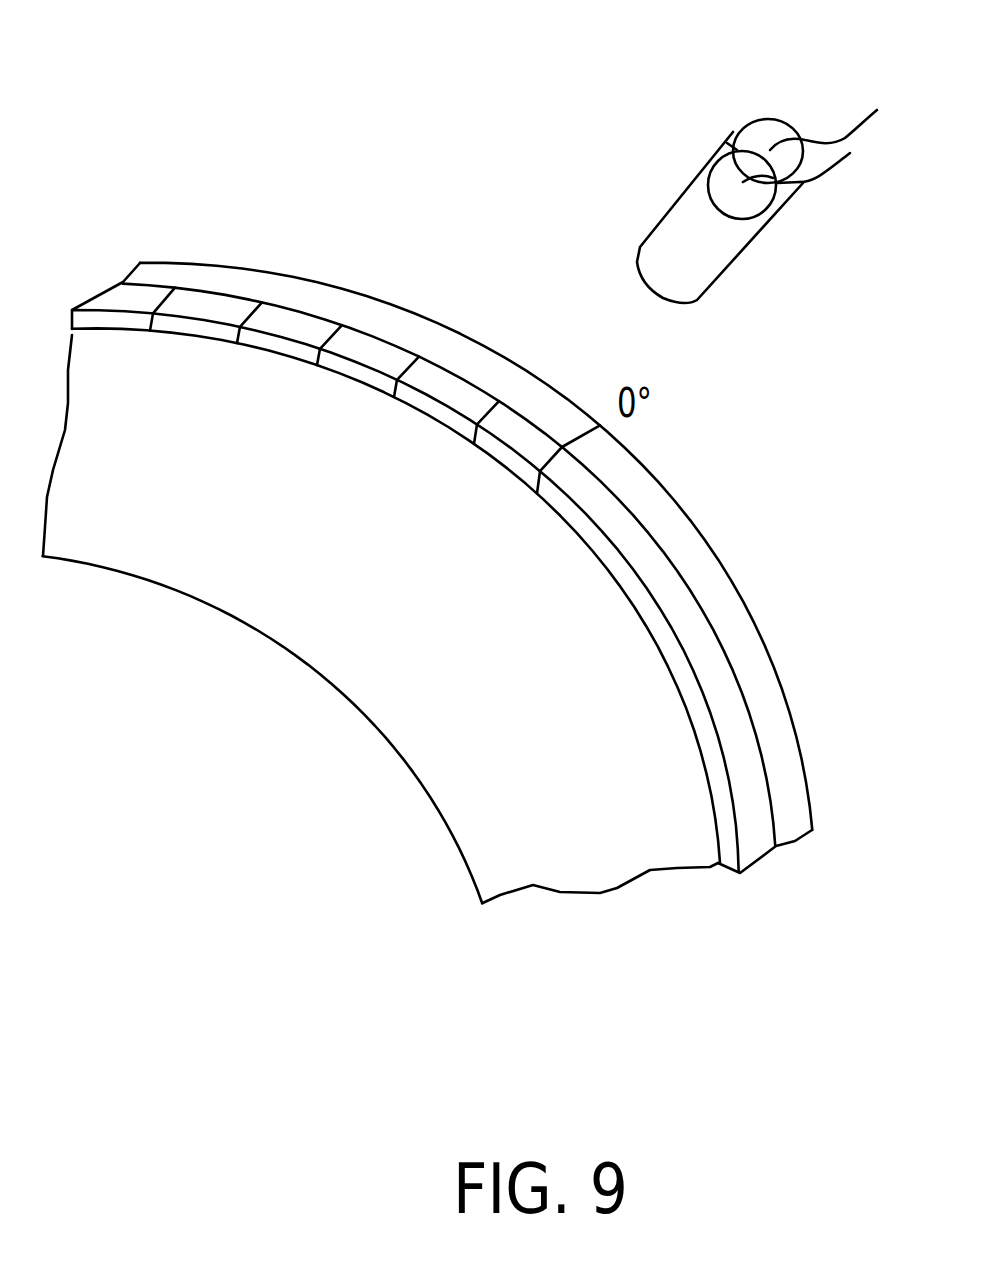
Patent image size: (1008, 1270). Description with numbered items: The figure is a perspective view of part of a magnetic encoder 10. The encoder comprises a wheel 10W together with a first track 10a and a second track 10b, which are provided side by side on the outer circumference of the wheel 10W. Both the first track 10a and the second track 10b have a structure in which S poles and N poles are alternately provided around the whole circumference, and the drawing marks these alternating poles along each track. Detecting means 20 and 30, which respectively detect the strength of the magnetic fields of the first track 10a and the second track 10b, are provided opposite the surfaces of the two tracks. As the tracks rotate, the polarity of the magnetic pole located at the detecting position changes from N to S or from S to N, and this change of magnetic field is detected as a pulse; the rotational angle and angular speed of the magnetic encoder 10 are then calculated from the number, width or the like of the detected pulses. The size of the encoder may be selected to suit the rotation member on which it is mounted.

The magnetic encoder 10 is at (443, 122).
The first track 10a is at (237, 277).
The second track 10b is at (273, 328).
The wheel 10W is at (327, 642).
The detecting means 20 is at (757, 127).
The detecting means 30 is at (738, 238).